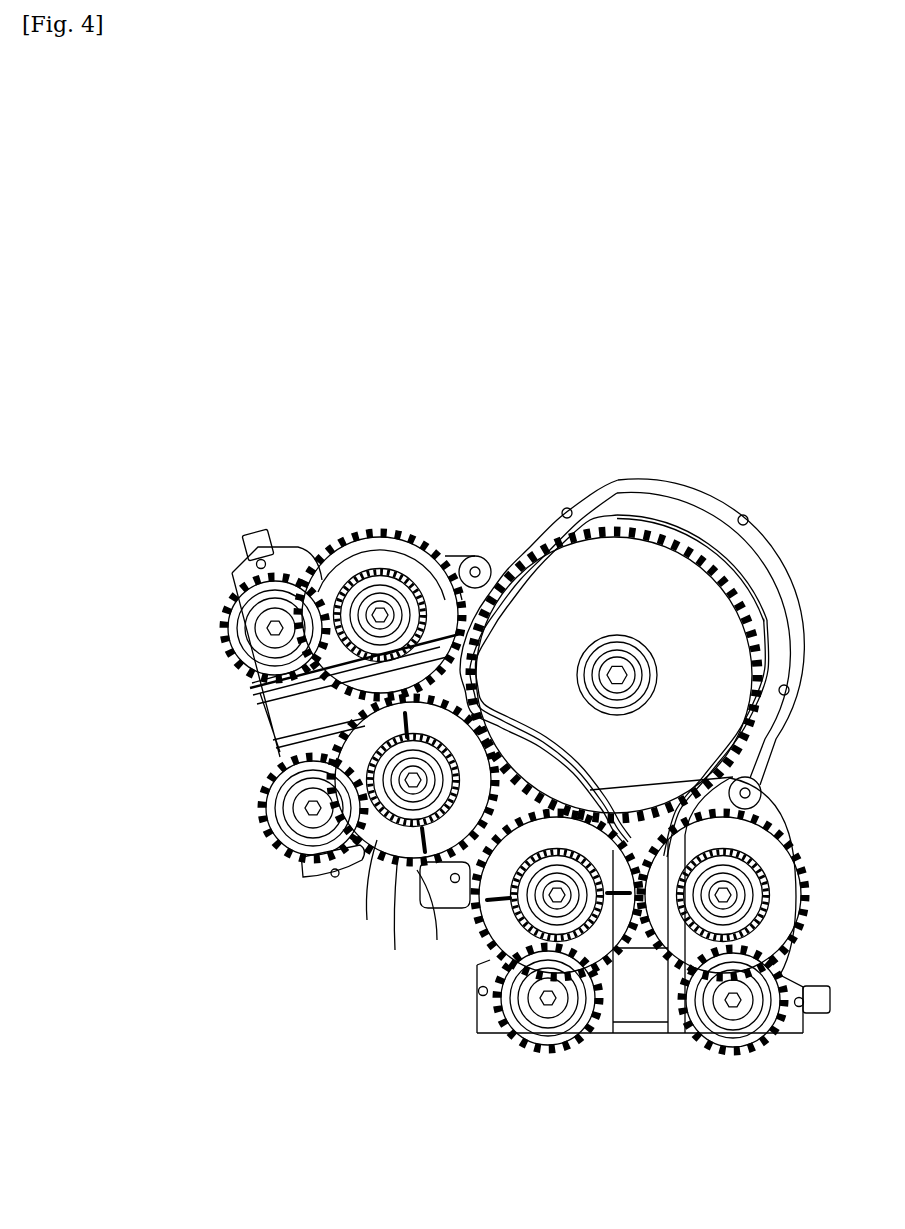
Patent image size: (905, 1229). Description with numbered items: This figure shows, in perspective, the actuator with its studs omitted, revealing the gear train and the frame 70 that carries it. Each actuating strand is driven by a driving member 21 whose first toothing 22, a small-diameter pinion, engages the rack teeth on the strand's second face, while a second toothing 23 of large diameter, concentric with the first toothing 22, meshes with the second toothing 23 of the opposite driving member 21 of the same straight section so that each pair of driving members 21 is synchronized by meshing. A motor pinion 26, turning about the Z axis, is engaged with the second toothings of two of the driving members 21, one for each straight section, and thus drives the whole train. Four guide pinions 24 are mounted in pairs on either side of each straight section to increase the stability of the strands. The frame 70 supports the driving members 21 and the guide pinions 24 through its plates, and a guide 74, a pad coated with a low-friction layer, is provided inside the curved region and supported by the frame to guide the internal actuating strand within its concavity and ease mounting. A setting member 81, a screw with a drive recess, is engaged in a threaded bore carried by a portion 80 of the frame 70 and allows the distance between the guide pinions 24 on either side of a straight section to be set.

The frame 70 is at (628, 481).
The guide 74 is at (540, 762).
The motor pinion 26 is at (680, 550).
The driving member 21 is at (347, 535).
The first toothing 22 is at (388, 585).
The second toothing 23 is at (385, 535).
The guide pinion 24 is at (228, 608).
The portion of the frame 80 is at (255, 685).
The setting member 81 is at (255, 532).